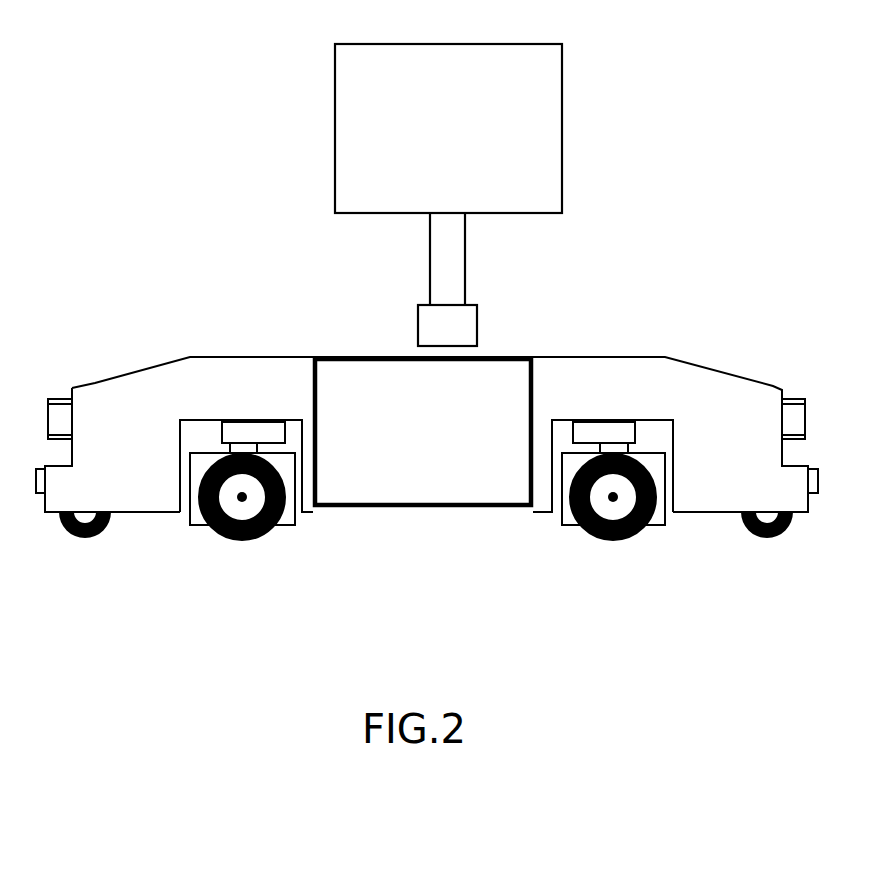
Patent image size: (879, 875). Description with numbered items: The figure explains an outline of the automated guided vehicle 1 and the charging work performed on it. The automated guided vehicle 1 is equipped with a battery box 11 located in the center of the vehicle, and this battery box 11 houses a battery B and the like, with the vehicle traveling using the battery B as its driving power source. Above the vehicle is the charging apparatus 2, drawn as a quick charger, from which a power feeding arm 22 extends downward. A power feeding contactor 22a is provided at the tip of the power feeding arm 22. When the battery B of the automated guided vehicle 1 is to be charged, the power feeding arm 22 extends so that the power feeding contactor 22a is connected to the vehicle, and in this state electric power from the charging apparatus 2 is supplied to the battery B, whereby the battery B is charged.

The automated guided vehicle 1 is at (427, 402).
The charging apparatus 2 is at (323, 183).
The battery box 11 is at (351, 342).
The power feeding arm 22 is at (465, 258).
The power feeding contactor 22a is at (477, 322).